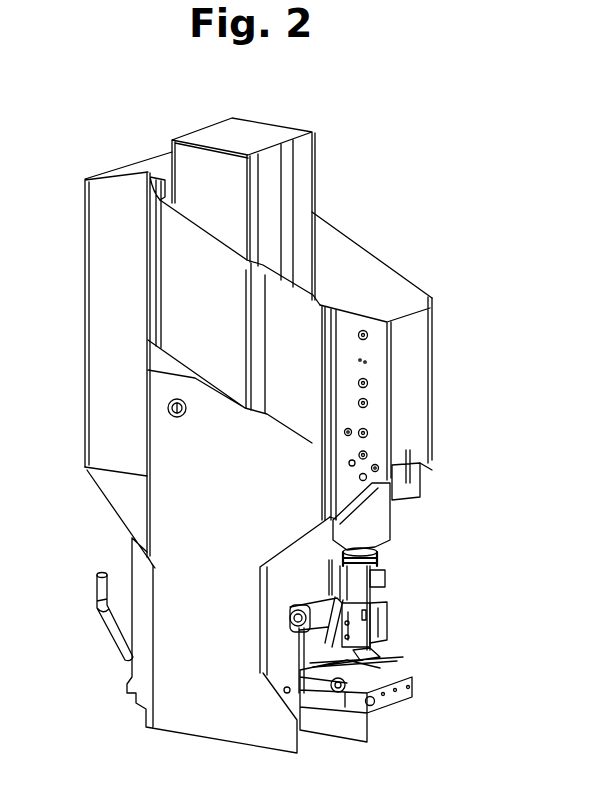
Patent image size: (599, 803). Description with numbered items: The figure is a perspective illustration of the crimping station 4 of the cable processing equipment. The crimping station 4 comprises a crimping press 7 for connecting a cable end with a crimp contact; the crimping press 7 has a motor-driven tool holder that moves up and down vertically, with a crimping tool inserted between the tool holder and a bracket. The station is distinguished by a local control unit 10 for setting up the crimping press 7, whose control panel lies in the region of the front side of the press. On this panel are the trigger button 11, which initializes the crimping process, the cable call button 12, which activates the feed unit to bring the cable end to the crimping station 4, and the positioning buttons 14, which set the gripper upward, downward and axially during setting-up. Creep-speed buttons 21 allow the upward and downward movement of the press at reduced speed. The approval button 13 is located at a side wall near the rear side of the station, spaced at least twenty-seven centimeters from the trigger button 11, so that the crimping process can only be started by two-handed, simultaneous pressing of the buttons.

The crimping station 4 is at (104, 112).
The crimping press 7 is at (417, 395).
The local control unit 10 is at (340, 333).
The trigger button 11 is at (363, 330).
The creep-speed buttons 21 is at (365, 385).
The cable call button 12 is at (335, 412).
The positioning buttons 14 is at (378, 467).
The approval button 13 is at (174, 416).